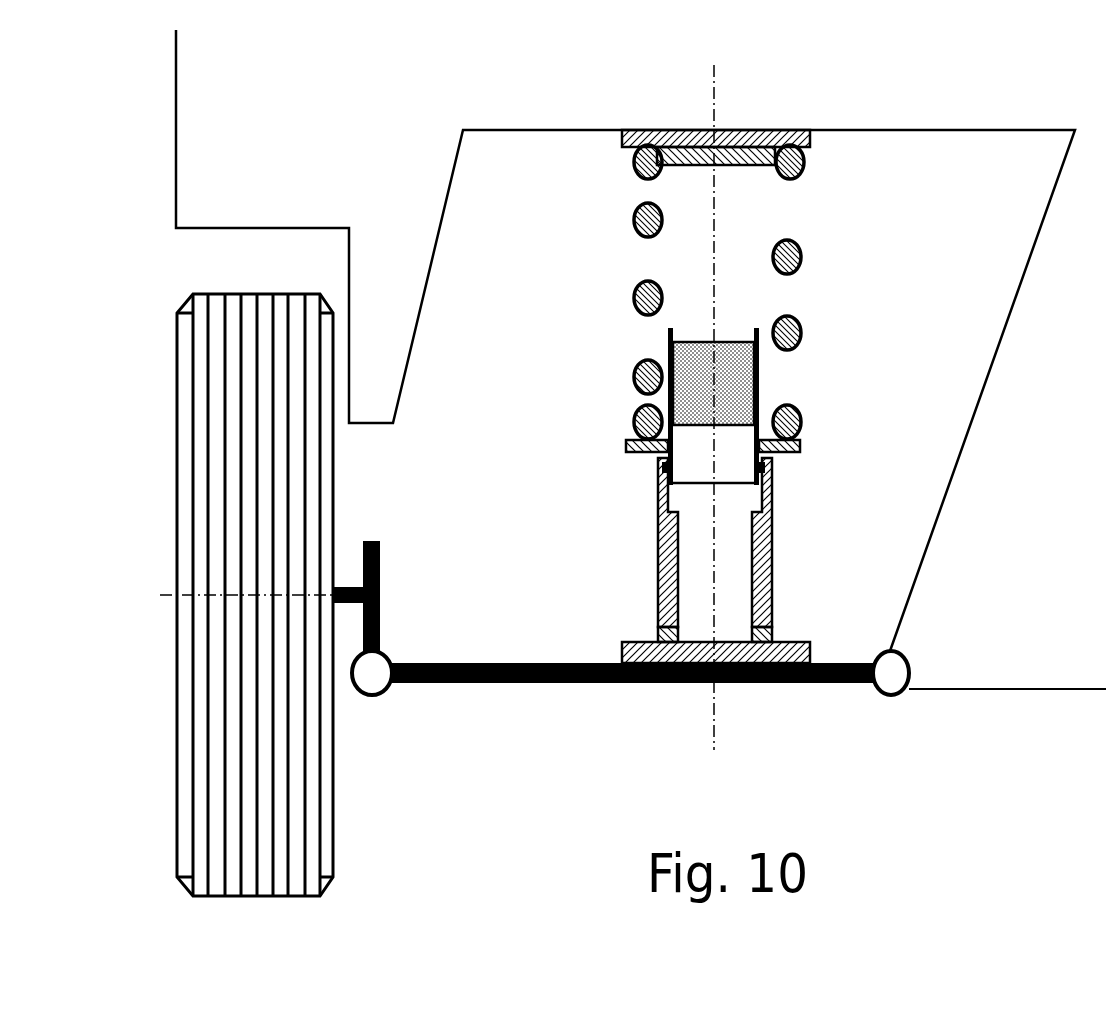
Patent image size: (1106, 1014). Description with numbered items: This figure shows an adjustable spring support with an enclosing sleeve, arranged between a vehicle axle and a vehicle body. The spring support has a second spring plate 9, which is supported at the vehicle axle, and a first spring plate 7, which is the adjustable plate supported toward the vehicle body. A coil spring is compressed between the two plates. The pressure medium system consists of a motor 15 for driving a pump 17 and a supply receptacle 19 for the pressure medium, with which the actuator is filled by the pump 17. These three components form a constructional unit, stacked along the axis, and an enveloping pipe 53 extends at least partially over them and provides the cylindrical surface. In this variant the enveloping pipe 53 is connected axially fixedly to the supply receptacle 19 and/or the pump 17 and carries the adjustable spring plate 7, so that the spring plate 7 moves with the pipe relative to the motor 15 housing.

The second spring plate 9 is at (776, 138).
The supply receptacle 19 is at (728, 382).
The enveloping pipe 53 is at (759, 395).
The first spring plate 7 is at (800, 447).
The pump 17 is at (735, 473).
The motor 15 is at (727, 569).